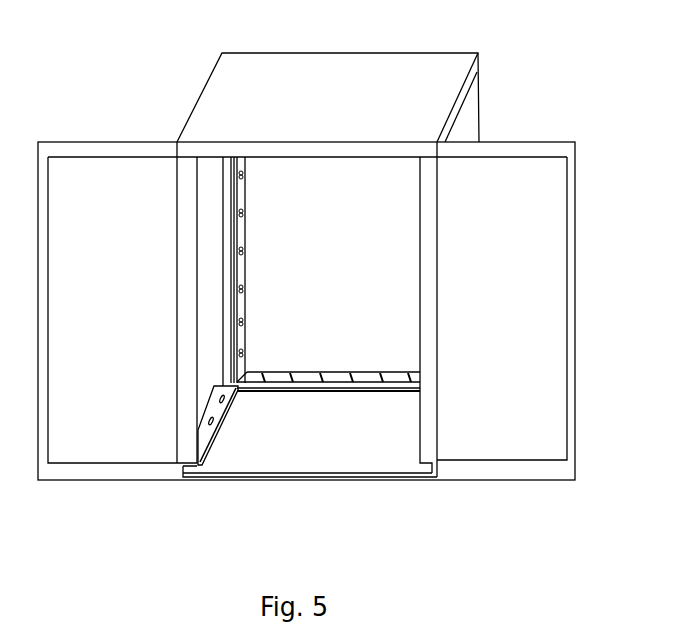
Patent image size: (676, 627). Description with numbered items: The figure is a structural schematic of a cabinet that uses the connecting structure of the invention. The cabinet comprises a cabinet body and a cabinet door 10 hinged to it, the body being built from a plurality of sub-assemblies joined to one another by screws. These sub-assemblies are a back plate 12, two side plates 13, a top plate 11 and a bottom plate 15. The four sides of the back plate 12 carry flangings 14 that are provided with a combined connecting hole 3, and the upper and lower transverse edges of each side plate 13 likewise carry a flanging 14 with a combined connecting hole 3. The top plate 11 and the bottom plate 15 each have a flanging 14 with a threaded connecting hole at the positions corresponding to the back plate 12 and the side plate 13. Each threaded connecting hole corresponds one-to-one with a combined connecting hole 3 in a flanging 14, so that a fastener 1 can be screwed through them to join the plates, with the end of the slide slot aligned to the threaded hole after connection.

The cabinet door 10 is at (115, 178).
The top plate 11 is at (272, 77).
The back plate 12 is at (317, 305).
The side plate 13 is at (210, 262).
The fastener 1 is at (245, 358).
The combined connecting hole 3 is at (320, 370).
The flanging 14 is at (232, 406).
The bottom plate 15 is at (320, 445).